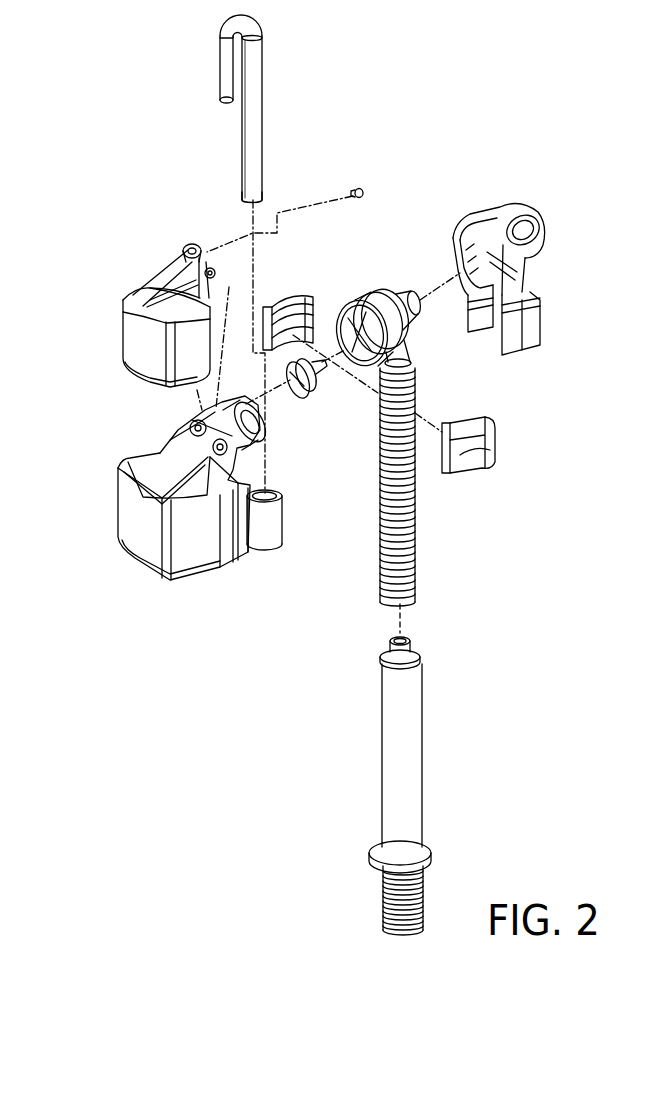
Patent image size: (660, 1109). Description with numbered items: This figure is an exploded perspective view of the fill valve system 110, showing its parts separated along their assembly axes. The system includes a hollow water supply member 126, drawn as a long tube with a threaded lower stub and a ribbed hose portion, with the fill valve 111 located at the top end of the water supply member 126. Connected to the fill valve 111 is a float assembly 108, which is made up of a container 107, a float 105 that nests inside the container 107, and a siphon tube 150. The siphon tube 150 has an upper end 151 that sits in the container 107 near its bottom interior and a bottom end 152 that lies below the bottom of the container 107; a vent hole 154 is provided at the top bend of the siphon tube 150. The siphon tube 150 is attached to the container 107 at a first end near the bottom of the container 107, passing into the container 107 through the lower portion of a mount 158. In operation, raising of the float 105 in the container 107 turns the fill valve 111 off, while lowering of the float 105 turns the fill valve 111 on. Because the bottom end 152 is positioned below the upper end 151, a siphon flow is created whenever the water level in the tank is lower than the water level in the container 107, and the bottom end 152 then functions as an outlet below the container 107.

The float 105 is at (137, 333).
The container 107 is at (132, 523).
The float assembly 108 is at (87, 409).
The fill valve system 110 is at (427, 155).
The fill valve 111 is at (376, 258).
The water supply member 126 is at (437, 568).
The siphon tube 150 is at (249, 109).
The upper end of siphon tube 151 is at (226, 104).
The bottom end of siphon tube 152 is at (248, 200).
The vent hole 154 is at (248, 24).
The mount 158 is at (265, 527).